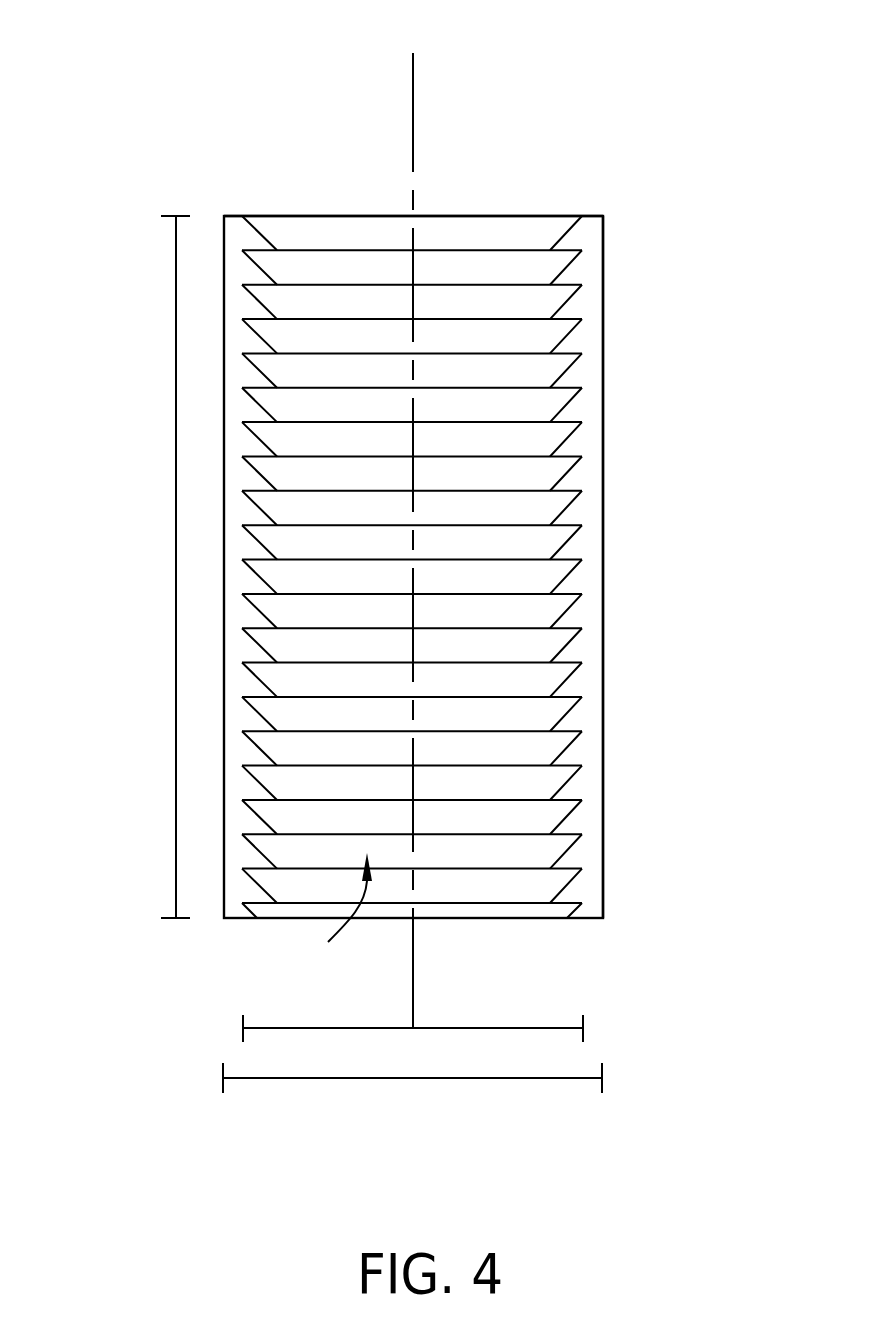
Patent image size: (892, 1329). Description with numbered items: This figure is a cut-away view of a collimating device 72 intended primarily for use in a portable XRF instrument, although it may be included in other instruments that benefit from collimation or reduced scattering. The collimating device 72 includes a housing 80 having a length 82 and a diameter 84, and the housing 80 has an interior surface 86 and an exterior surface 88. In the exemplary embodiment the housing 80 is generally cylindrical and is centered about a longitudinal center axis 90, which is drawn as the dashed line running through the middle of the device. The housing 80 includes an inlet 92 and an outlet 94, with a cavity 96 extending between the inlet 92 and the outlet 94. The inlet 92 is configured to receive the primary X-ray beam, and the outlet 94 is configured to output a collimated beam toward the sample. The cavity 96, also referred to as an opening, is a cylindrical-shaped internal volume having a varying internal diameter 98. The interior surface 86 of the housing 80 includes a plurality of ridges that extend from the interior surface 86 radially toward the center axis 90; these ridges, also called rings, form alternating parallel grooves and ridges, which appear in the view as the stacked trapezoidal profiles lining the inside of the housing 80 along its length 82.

The collimating device 72 is at (668, 70).
The housing 80 is at (603, 432).
The length 82 is at (175, 663).
The diameter 84 is at (533, 1078).
The interior surface 86 is at (553, 243).
The exterior surface 88 is at (603, 676).
The longitudinal center axis 90 is at (413, 85).
The inlet 92 is at (515, 920).
The outlet 94 is at (333, 215).
The cavity 96 is at (327, 917).
The internal diameter 98 is at (558, 1028).